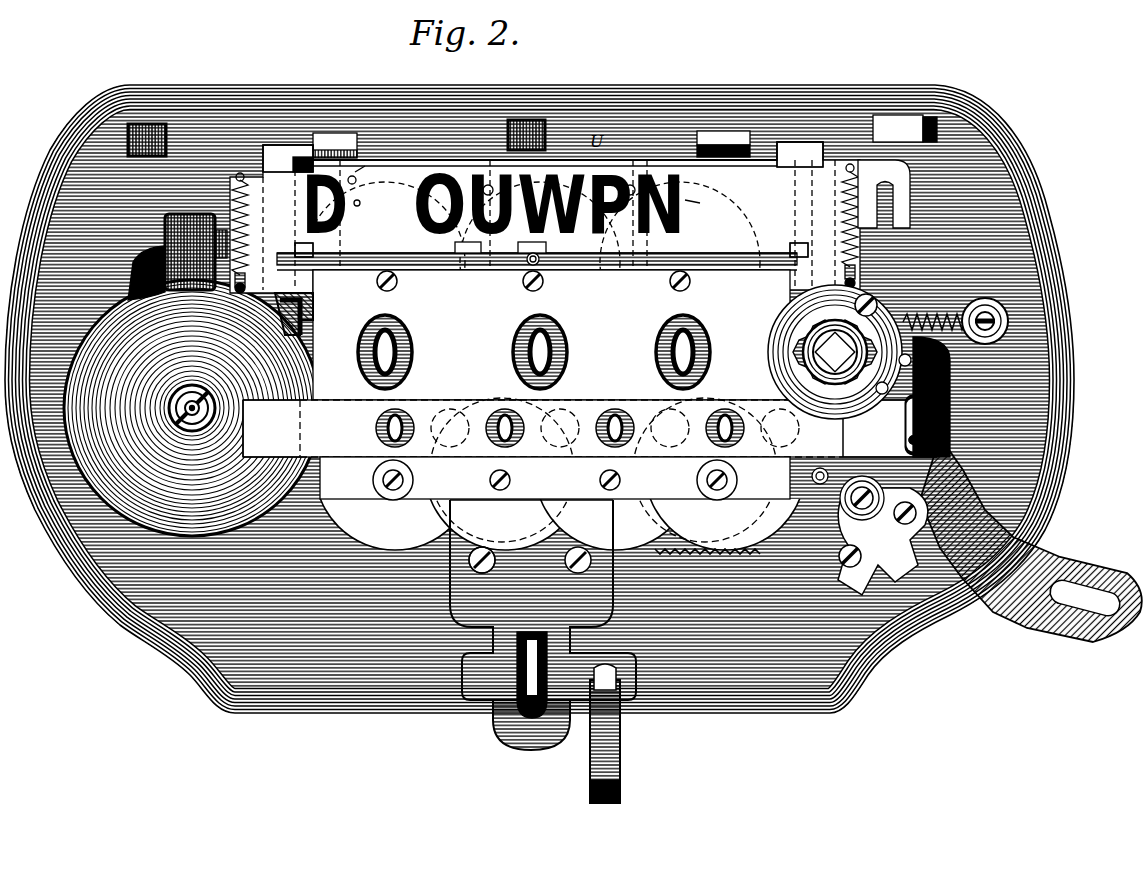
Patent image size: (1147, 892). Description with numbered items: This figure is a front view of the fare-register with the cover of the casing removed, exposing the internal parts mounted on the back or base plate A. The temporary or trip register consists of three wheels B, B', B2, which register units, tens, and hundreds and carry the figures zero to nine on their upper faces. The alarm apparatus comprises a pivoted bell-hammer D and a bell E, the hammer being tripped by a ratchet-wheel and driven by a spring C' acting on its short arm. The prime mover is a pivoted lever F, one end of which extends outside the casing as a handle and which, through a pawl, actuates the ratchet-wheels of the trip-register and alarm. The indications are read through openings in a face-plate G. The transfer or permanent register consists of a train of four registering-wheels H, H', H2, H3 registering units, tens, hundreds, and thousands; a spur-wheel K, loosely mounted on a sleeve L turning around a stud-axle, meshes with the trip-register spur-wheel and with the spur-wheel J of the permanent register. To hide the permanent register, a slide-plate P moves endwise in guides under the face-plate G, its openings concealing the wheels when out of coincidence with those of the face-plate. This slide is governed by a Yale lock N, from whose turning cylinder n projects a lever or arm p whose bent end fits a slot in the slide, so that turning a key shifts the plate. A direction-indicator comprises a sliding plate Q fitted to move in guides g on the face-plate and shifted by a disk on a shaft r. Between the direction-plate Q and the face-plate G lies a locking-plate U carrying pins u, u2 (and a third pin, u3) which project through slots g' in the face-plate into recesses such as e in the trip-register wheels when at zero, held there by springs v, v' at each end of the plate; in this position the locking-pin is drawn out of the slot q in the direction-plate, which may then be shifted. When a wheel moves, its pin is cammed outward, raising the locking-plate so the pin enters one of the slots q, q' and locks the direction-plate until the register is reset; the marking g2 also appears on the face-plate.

The back or base plate A is at (539, 399).
The units-wheel of trip-register B is at (565, 342).
The tens-wheel of trip-register B' is at (694, 352).
The hundreds-wheel of trip-register B2 is at (401, 352).
The spring C' is at (955, 314).
The pivoted bell-hammer D is at (177, 257).
The bell E is at (192, 408).
The pivoted lever F is at (1031, 539).
The face-plate G is at (532, 335).
The units registering-wheel of permanent register H is at (560, 476).
The tens registering-wheel of permanent register H' is at (555, 517).
The hundreds registering-wheel of permanent register H2 is at (543, 600).
The thousands registering-wheel of permanent register H3 is at (463, 560).
The spur-wheel of permanent register J is at (639, 675).
The spur-wheel K is at (867, 344).
The sleeve L is at (835, 352).
The Yale lock N is at (883, 535).
The turning cylinder of lock n is at (863, 510).
The slide-plate P is at (590, 470).
The lever or arm p is at (923, 460).
The direction-plate Q is at (545, 242).
The locking-plate U is at (533, 282).
The pin of locking-plate u is at (559, 200).
The pin of locking-plate u2 is at (363, 191).
The pin u3 is at (540, 262).
The recess e is at (692, 203).
The guides g is at (543, 210).
The slots g' is at (415, 167).
The guide g2 is at (623, 165).
The slot in direction-plate q is at (532, 244).
The slot in direction-plate q' is at (468, 238).
The shaft r is at (884, 194).
The spring v is at (248, 233).
The spring v' is at (858, 226).